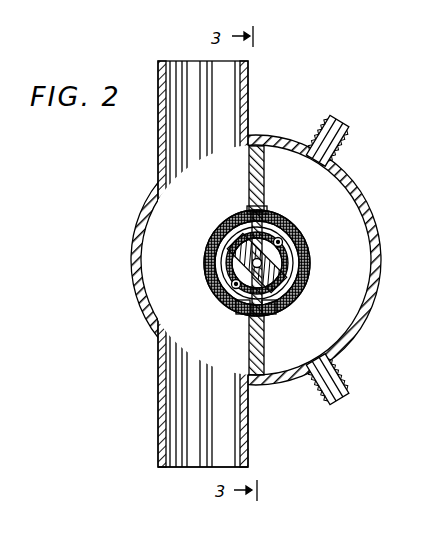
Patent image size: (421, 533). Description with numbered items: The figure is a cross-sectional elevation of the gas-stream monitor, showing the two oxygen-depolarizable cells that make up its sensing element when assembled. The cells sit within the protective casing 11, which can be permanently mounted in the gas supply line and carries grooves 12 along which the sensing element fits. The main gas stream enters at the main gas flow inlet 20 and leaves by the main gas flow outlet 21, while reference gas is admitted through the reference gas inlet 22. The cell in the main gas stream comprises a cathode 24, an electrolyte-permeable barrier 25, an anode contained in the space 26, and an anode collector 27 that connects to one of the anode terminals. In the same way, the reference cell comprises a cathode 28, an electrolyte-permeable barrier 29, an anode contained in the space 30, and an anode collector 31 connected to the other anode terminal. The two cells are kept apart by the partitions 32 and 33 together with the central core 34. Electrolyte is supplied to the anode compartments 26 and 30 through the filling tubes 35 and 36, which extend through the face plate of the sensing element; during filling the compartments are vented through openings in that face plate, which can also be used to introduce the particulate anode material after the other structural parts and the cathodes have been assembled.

The protective casing 11 is at (139, 221).
The grooves 12 is at (266, 196).
The main gas flow inlet 20 is at (181, 61).
The main gas flow outlet 21 is at (160, 446).
The reference gas inlet 22 is at (335, 130).
The cathode 24 is at (205, 258).
The electrolyte-permeable barrier 25 is at (215, 286).
The anode space 26 is at (221, 223).
The anode collector 27 is at (224, 302).
The cathode 28 is at (310, 263).
The electrolyte-permeable barrier 29 is at (300, 282).
The anode space 30 is at (301, 300).
The anode collector 31 is at (291, 251).
The partition 32 is at (253, 208).
The partition 33 is at (343, 391).
The central core 34 is at (274, 311).
The filling tube 35 is at (232, 312).
The filling tube 36 is at (283, 237).